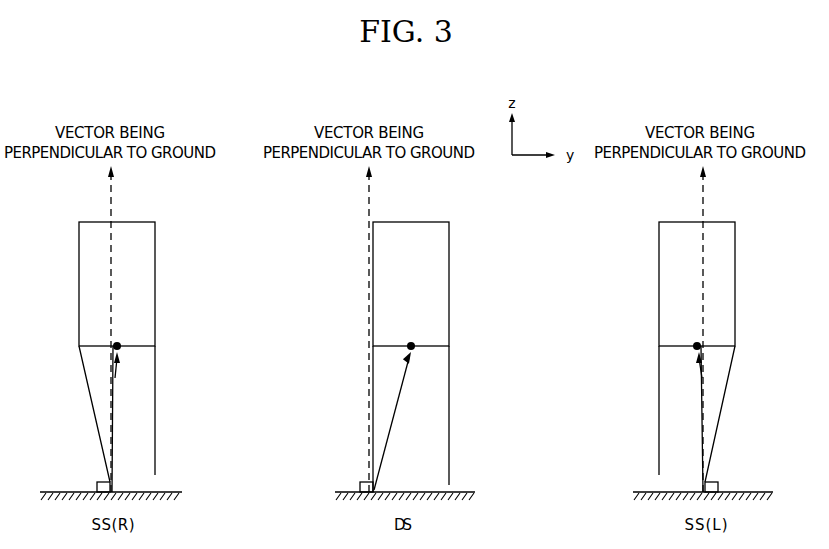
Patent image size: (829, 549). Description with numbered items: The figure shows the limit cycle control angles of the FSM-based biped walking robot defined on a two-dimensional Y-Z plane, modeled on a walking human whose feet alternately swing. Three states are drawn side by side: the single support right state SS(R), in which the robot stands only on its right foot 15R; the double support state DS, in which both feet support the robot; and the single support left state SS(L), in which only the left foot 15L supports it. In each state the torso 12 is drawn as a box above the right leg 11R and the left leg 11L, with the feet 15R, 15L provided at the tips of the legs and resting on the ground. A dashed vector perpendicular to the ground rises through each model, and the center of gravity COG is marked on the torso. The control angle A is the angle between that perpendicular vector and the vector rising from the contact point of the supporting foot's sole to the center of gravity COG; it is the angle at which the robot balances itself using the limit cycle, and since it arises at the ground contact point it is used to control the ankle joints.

The torso 12 is at (763, 252).
The right leg 11R is at (659, 411).
The left leg 11L is at (757, 412).
The right foot 15R is at (360, 486).
The left foot 15L is at (719, 486).
The center of gravity COG is at (694, 344).
The control angle A is at (698, 371).